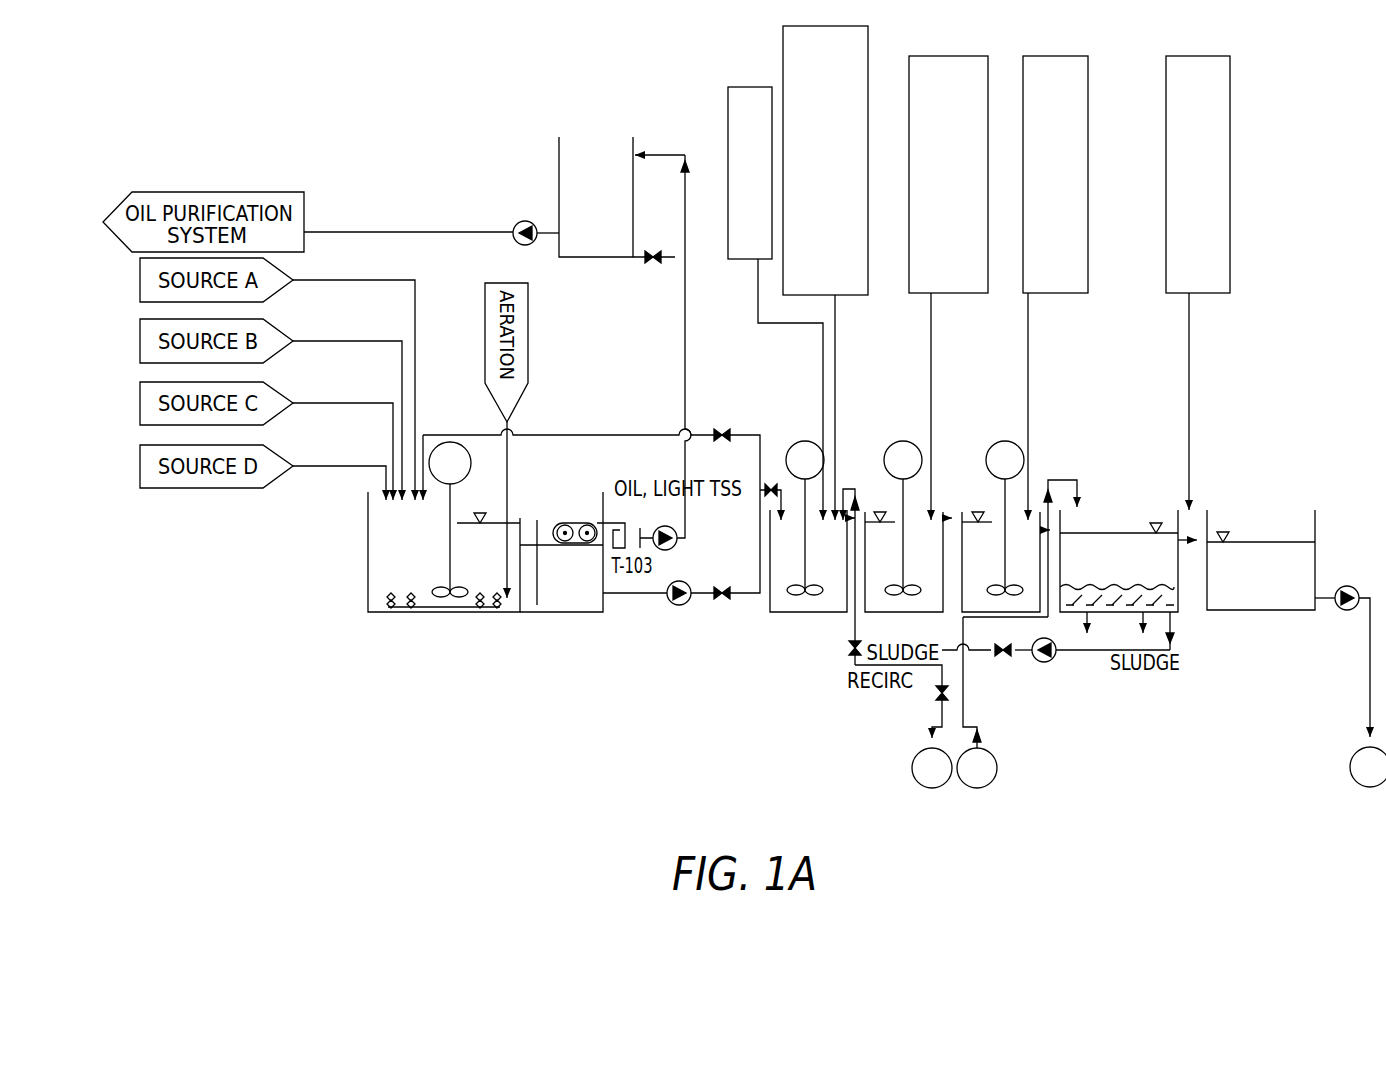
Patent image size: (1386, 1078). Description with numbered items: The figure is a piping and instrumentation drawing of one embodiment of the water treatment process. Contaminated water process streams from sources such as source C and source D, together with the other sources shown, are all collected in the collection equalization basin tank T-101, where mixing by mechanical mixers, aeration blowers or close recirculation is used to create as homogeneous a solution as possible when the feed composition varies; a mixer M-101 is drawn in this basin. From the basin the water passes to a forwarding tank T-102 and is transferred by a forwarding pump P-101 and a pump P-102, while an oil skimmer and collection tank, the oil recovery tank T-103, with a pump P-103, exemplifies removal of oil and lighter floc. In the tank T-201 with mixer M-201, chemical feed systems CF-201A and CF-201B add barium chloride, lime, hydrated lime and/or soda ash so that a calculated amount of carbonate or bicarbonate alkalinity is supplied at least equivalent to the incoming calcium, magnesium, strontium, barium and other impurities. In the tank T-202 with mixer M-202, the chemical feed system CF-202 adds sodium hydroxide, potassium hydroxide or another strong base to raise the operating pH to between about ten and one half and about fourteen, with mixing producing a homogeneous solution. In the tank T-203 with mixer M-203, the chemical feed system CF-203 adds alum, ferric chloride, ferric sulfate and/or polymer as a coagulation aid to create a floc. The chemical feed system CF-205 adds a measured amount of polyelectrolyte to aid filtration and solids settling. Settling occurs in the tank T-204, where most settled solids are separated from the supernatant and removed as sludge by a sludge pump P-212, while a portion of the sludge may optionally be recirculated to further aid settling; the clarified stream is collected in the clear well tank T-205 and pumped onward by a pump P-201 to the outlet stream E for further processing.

The collection equalization basin tank T-101 is at (440, 601).
The forwarding tank T-102 is at (568, 590).
The oil recovery tank T-103 is at (615, 236).
The forwarding pump P-101 is at (687, 634).
The oil skimmer pump P-102 is at (681, 366).
The oil transfer pump P-103 is at (525, 247).
The mixer M-101 is at (450, 519).
The tank T-201 is at (807, 563).
The tank T-202 is at (908, 576).
The tank T-203 is at (1006, 576).
The tank T-204 is at (1128, 580).
The tank T-205 is at (1261, 574).
The mixer M-201 is at (805, 518).
The mixer M-202 is at (903, 518).
The mixer M-203 is at (1005, 518).
The clear well pump P-201 is at (1342, 661).
The sludge pump P-212 is at (1093, 665).
The chemical feed system CF-201A is at (760, 303).
The chemical feed system CF-201B is at (838, 273).
The chemical feed system CF-202 is at (961, 288).
The chemical feed system CF-203 is at (1062, 288).
The chemical feed system CF-205 is at (1209, 283).
The water process stream source C is at (932, 768).
The water process stream source D is at (977, 768).
The stream E connector E is at (1368, 767).